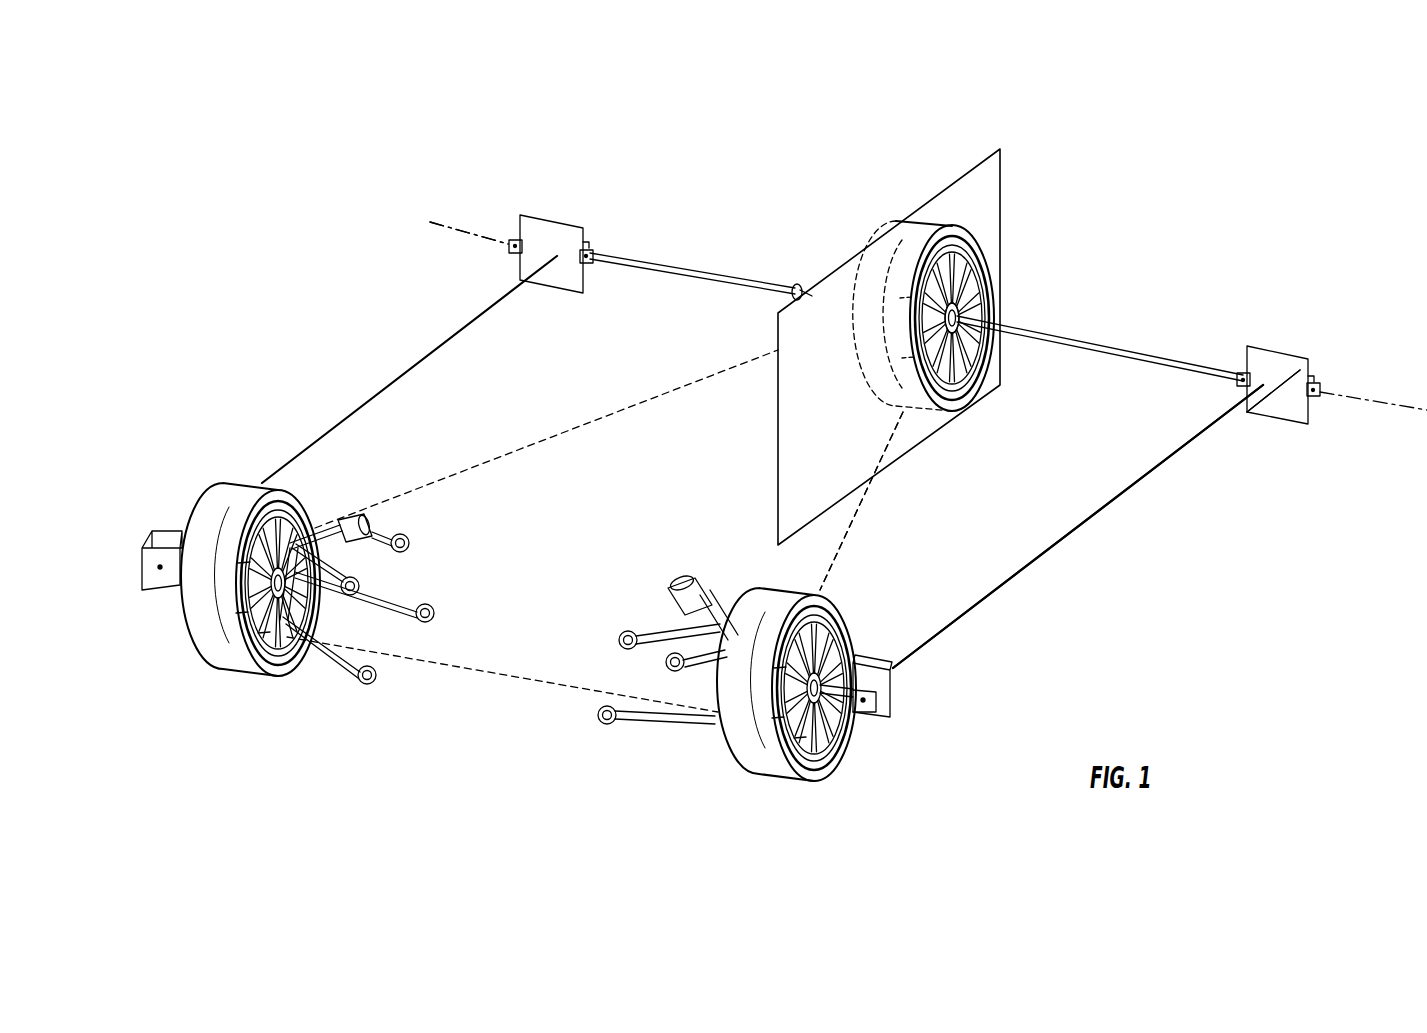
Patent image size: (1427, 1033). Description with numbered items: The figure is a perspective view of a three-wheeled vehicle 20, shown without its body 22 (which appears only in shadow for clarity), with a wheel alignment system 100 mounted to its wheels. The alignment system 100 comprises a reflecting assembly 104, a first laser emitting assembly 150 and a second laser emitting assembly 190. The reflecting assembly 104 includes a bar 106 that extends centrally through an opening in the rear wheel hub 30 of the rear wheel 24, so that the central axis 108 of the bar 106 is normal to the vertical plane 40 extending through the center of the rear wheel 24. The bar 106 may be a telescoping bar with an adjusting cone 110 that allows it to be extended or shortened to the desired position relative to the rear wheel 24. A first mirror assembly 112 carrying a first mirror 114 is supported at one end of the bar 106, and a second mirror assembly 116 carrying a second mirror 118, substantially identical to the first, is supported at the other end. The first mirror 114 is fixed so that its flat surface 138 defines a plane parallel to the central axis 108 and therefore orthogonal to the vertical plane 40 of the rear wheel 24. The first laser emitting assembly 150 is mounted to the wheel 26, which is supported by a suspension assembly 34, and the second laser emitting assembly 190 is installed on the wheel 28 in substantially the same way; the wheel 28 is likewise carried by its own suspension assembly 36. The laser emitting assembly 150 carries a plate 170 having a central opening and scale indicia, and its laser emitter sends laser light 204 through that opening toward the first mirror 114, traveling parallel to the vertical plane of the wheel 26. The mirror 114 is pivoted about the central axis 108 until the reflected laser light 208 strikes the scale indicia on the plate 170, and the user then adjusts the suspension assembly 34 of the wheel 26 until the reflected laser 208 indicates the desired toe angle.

The wheel alignment system 100 is at (362, 193).
The central axis 108 is at (468, 233).
The second mirror assembly 116 is at (589, 208).
The second mirror 118 is at (537, 229).
The adjusting cone 110 is at (798, 290).
The three-wheeled vehicle 20 is at (866, 311).
The plane 40 is at (777, 345).
The rear wheel 24 is at (880, 232).
The rear wheel hub 30 is at (958, 316).
The body 22 is at (850, 531).
The bar 106 is at (1057, 337).
The reflecting assembly 104 is at (1173, 294).
The first mirror assembly 112 is at (1321, 335).
The first mirror 114 is at (1295, 372).
The flat surface 138 is at (1279, 400).
The laser light 204 is at (918, 648).
The wheel 28 is at (215, 500).
The second laser emitting assembly 190 is at (149, 600).
The left suspension links 36 is at (432, 571).
The wheel 26 is at (835, 594).
The reflected laser light 208 is at (900, 676).
The plate 170 is at (880, 715).
The first laser emitting assembly 150 is at (869, 758).
The suspension assembly 34 is at (660, 588).